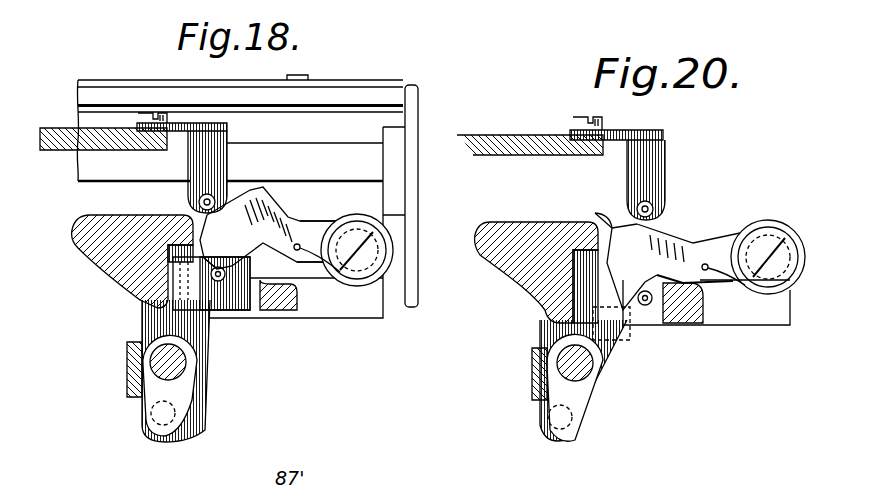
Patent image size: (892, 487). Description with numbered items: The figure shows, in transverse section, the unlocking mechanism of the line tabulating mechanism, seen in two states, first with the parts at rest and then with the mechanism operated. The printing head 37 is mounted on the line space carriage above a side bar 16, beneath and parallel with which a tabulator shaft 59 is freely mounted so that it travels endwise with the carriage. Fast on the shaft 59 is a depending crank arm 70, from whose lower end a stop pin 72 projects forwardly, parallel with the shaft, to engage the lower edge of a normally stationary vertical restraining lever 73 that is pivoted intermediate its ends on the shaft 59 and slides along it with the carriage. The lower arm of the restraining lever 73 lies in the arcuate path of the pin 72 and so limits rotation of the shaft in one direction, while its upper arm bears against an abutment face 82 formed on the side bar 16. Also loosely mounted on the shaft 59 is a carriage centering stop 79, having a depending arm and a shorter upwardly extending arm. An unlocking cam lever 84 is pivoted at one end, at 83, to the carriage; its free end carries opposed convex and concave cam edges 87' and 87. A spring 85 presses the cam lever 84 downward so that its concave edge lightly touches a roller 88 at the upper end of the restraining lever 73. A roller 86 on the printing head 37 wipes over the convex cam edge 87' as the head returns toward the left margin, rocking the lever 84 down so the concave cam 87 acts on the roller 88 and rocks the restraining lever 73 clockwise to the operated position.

In FIG. 18, the side bar 16 is at (110, 222).
In FIG. 20, the side bar 16 is at (522, 230).
In FIG. 18, the printing head 37 is at (229, 187).
In FIG. 20, the printing head 37 is at (560, 136).
In FIG. 18, the tabulator shaft 59 is at (168, 362).
In FIG. 20, the tabulator shaft 59 is at (590, 370).
In FIG. 18, the crank arm 70 is at (187, 395).
In FIG. 20, the crank arm 70 is at (567, 387).
In FIG. 18, the stop pin 72 is at (155, 425).
In FIG. 20, the stop pin 72 is at (550, 433).
In FIG. 18, the restraining lever 73 is at (207, 342).
In FIG. 20, the restraining lever 73 is at (623, 362).
In FIG. 18, the carriage centering stop 79 is at (207, 285).
In FIG. 20, the carriage centering stop 79 is at (630, 337).
In FIG. 18, the abutment face 82 is at (140, 277).
In FIG. 20, the abutment face 82 is at (550, 292).
In FIG. 18, the pivot of unlocking cam lever 83 is at (362, 250).
In FIG. 20, the pivot of unlocking cam lever 83 is at (750, 277).
In FIG. 18, the unlocking cam lever 84 is at (278, 213).
In FIG. 20, the unlocking cam lever 84 is at (677, 243).
In FIG. 18, the spring 85 is at (300, 248).
In FIG. 20, the spring 85 is at (708, 266).
In FIG. 18, the roller 86 is at (212, 188).
In FIG. 20, the roller 86 is at (660, 200).
In FIG. 18, the concave cam edge 87 is at (222, 244).
In FIG. 20, the concave cam edge 87 is at (612, 254).
In FIG. 18, the convex cam edge 87' is at (276, 212).
In FIG. 20, the convex cam edge 87' is at (601, 200).
In FIG. 18, the roller 88 is at (227, 268).
In FIG. 20, the roller 88 is at (653, 300).